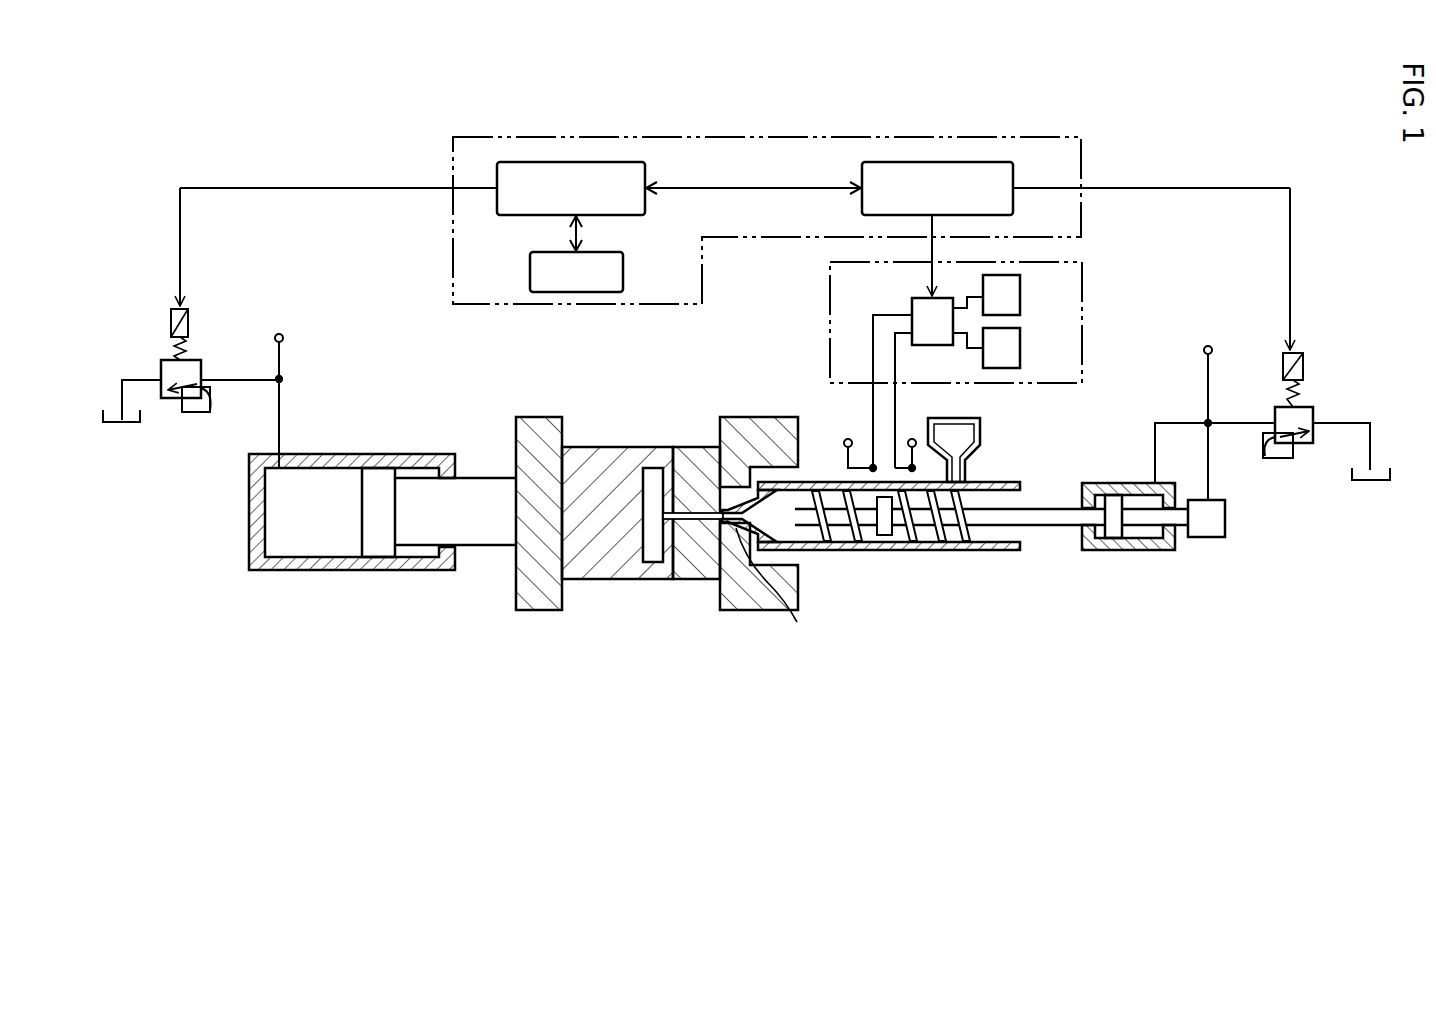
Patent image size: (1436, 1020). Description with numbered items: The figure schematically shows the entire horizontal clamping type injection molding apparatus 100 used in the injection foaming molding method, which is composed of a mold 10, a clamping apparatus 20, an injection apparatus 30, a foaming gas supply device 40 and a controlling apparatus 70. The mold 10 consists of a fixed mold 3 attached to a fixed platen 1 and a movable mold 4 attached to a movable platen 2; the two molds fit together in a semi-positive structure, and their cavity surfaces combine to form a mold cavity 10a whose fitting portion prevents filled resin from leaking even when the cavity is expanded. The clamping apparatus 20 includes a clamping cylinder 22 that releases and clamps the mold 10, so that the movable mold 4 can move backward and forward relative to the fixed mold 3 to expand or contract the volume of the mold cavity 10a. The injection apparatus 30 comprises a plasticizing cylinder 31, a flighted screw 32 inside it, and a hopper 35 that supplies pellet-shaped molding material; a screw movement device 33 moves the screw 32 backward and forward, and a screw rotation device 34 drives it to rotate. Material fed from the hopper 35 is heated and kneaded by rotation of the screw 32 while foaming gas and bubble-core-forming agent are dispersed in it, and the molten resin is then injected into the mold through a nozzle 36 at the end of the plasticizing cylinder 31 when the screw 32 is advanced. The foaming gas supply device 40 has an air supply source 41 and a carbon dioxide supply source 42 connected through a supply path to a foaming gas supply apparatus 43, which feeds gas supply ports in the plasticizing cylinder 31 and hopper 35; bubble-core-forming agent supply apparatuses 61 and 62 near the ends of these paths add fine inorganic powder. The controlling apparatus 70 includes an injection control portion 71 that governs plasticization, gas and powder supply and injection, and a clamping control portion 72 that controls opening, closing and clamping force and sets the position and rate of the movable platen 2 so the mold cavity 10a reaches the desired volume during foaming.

The fixed platen 1 is at (745, 602).
The movable platen 2 is at (535, 612).
The fixed mold 3 is at (690, 580).
The movable mold 4 is at (601, 580).
The mold 10 is at (670, 572).
The mold cavity 10a is at (652, 496).
The clamping apparatus 20 is at (309, 469).
The clamping cylinder 22 is at (303, 571).
The injection apparatus 30 is at (1056, 471).
The plasticizing cylinder 31 is at (866, 551).
The screw 32 is at (926, 525).
The screw movement device 33 is at (1122, 551).
The screw rotation device 34 is at (1208, 538).
The hopper 35 is at (980, 425).
The nozzle 36 is at (780, 591).
The foaming gas supply device 40 is at (998, 363).
The air supply source 41 is at (1020, 285).
The carbon dioxide supply source 42 is at (1020, 348).
The foaming gas supply apparatus 43 is at (912, 303).
The bubble-core-forming agent supply apparatus 61 is at (912, 437).
The bubble-core-forming agent supply apparatus 62 is at (846, 437).
The controlling apparatus 70 is at (735, 190).
The injection control portion 71 is at (922, 162).
The clamping control portion 72 is at (538, 162).
The horizontal clamping type injection molding apparatus 100 is at (746, 518).